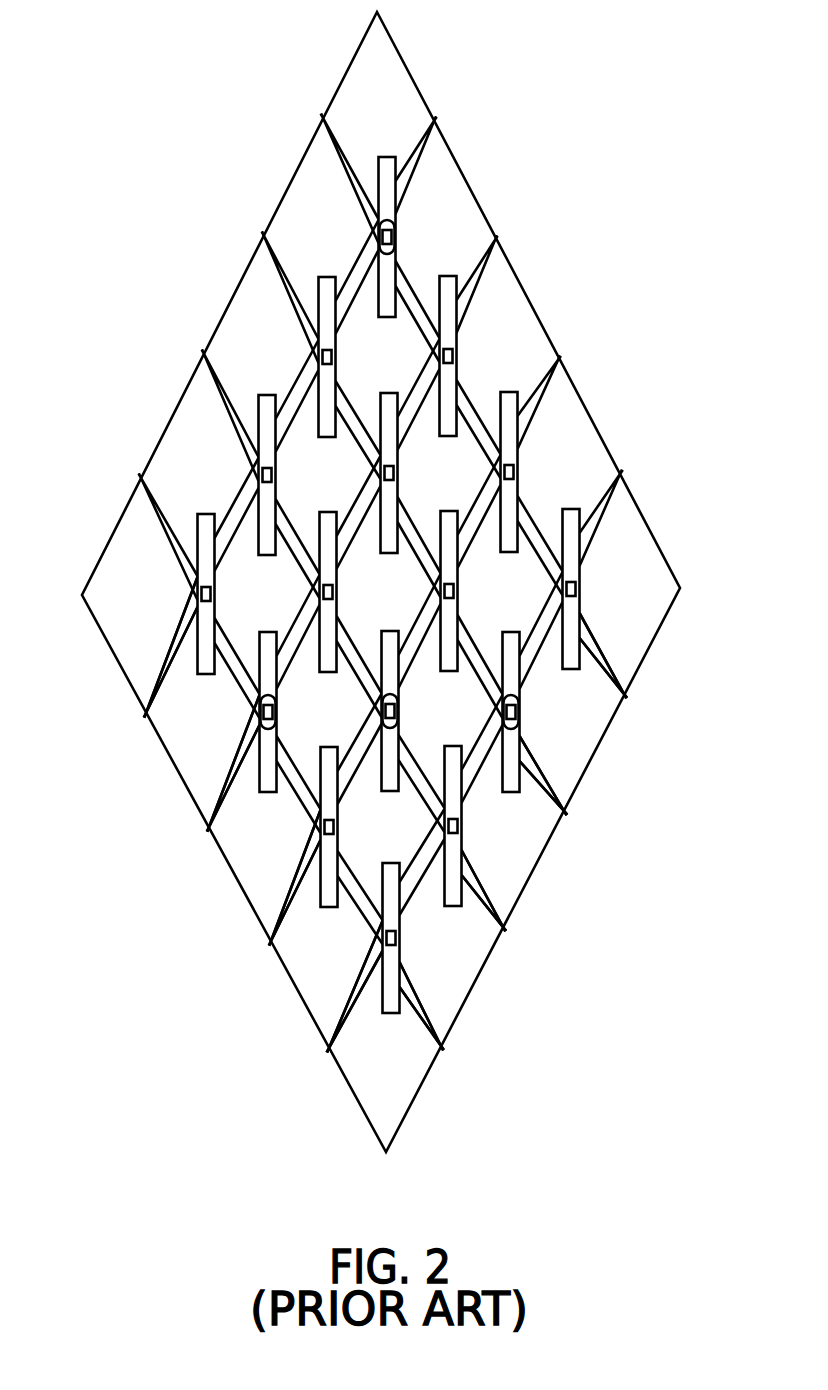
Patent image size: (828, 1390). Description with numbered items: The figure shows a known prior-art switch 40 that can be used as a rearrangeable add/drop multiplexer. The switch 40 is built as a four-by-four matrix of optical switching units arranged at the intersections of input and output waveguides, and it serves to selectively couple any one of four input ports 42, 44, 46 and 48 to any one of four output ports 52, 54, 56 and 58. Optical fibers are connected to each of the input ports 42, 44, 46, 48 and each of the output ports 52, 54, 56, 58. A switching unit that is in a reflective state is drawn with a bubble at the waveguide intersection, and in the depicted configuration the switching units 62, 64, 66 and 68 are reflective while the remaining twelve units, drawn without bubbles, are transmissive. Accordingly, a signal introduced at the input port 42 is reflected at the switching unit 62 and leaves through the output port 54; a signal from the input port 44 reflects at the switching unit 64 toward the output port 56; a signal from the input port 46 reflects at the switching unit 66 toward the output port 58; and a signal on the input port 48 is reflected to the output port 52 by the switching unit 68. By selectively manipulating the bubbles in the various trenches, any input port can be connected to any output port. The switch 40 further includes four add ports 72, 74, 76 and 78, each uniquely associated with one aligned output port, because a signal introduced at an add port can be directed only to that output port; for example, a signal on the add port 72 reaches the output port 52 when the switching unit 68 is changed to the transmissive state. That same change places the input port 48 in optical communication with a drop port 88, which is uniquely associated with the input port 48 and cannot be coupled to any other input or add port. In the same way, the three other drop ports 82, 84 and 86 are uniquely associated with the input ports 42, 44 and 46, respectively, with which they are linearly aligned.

The switch 40 is at (380, 582).
The input port 42 is at (141, 477).
The input port 44 is at (203, 354).
The input port 46 is at (263, 236).
The input port 48 is at (322, 117).
The output port 52 is at (145, 714).
The output port 54 is at (208, 829).
The output port 56 is at (270, 943).
The output port 58 is at (328, 1050).
The switching unit 62 is at (238, 711).
The switching unit 64 is at (358, 713).
The switching unit 66 is at (542, 714).
The switching unit 68 is at (410, 229).
The add port 72 is at (436, 120).
The add port 74 is at (497, 238).
The add port 76 is at (560, 358).
The add port 78 is at (622, 474).
The drop port 82 is at (441, 1047).
The drop port 84 is at (503, 928).
The drop port 86 is at (564, 812).
The drop port 88 is at (624, 696).